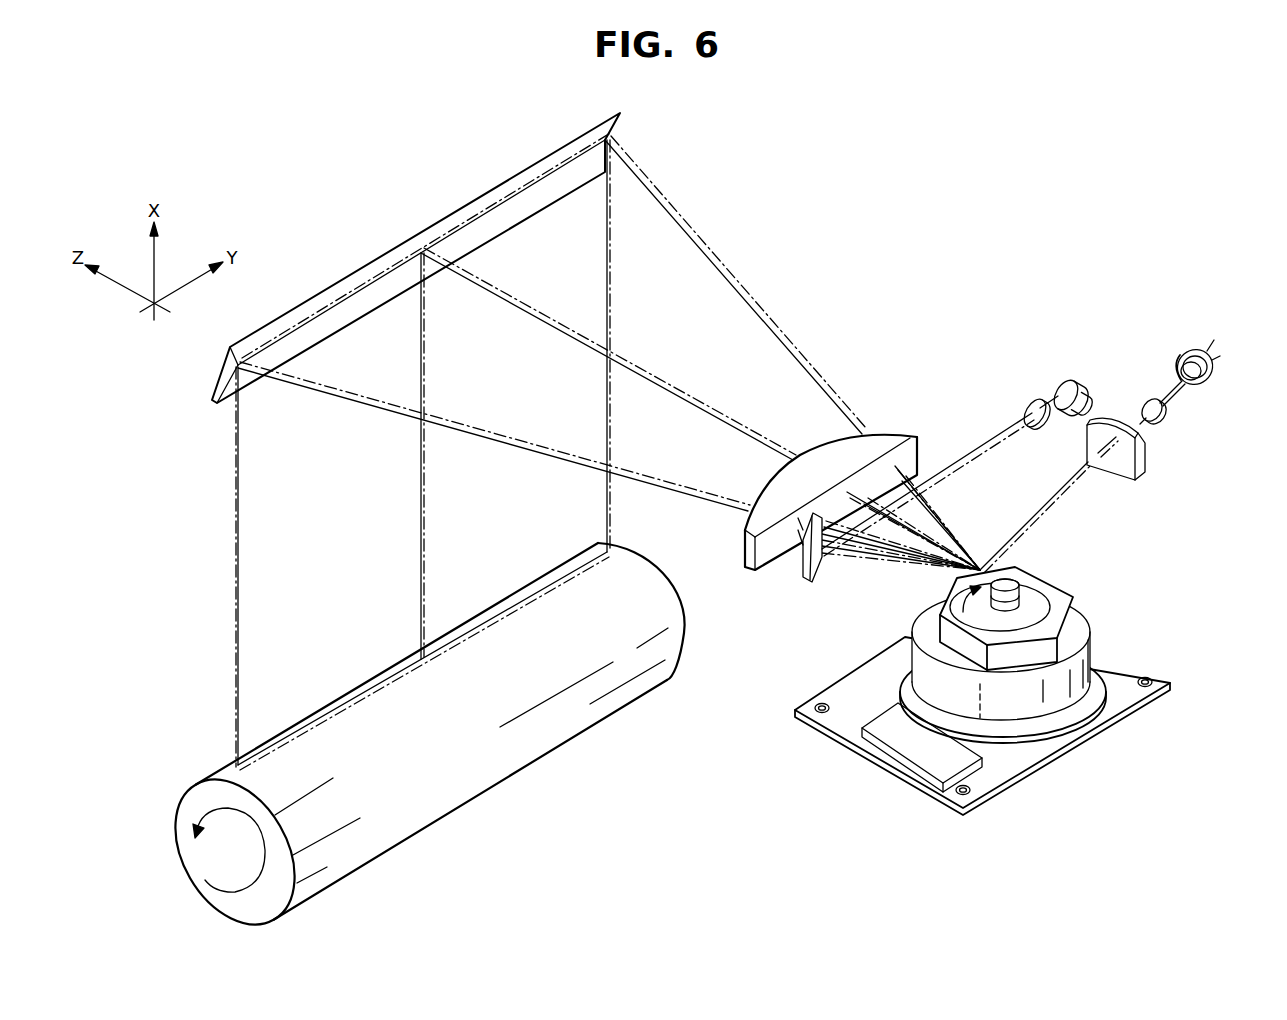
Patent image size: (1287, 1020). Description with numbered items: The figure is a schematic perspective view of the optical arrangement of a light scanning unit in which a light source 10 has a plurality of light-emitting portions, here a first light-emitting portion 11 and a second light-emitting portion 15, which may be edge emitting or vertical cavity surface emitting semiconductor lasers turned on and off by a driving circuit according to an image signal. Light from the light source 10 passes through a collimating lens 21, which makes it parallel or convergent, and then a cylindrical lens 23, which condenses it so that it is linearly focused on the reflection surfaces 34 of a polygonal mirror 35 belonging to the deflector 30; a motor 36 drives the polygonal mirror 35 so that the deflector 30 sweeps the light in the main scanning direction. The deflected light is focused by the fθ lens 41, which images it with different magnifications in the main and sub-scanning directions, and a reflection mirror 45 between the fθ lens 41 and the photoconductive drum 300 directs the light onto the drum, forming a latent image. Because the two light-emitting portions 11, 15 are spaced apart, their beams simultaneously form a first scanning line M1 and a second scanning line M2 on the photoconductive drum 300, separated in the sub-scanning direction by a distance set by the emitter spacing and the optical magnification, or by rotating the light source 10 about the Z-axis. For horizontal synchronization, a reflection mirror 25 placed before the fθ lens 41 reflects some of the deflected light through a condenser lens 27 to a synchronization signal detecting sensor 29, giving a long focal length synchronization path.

The light source 10 is at (1183, 348).
The first light-emitting portion 11 is at (1194, 388).
The second light-emitting portion 15 is at (1179, 369).
The collimating lens 21 is at (1160, 422).
The cylindrical lens 23 is at (1138, 474).
The reflection mirror 25 is at (806, 582).
The condenser lens 27 is at (1030, 403).
The synchronization signal detecting sensor 29 is at (1067, 381).
The deflector 30 is at (987, 659).
The reflection surfaces 34 is at (1022, 657).
The polygonal mirror 35 is at (1062, 600).
The motor 36 is at (1078, 688).
The fθ lens 41 is at (748, 570).
The reflection mirror 45 is at (337, 279).
The photoconductive drum 300 is at (526, 786).
The first scanning line M1 is at (677, 227).
The second scanning line M2 is at (736, 286).